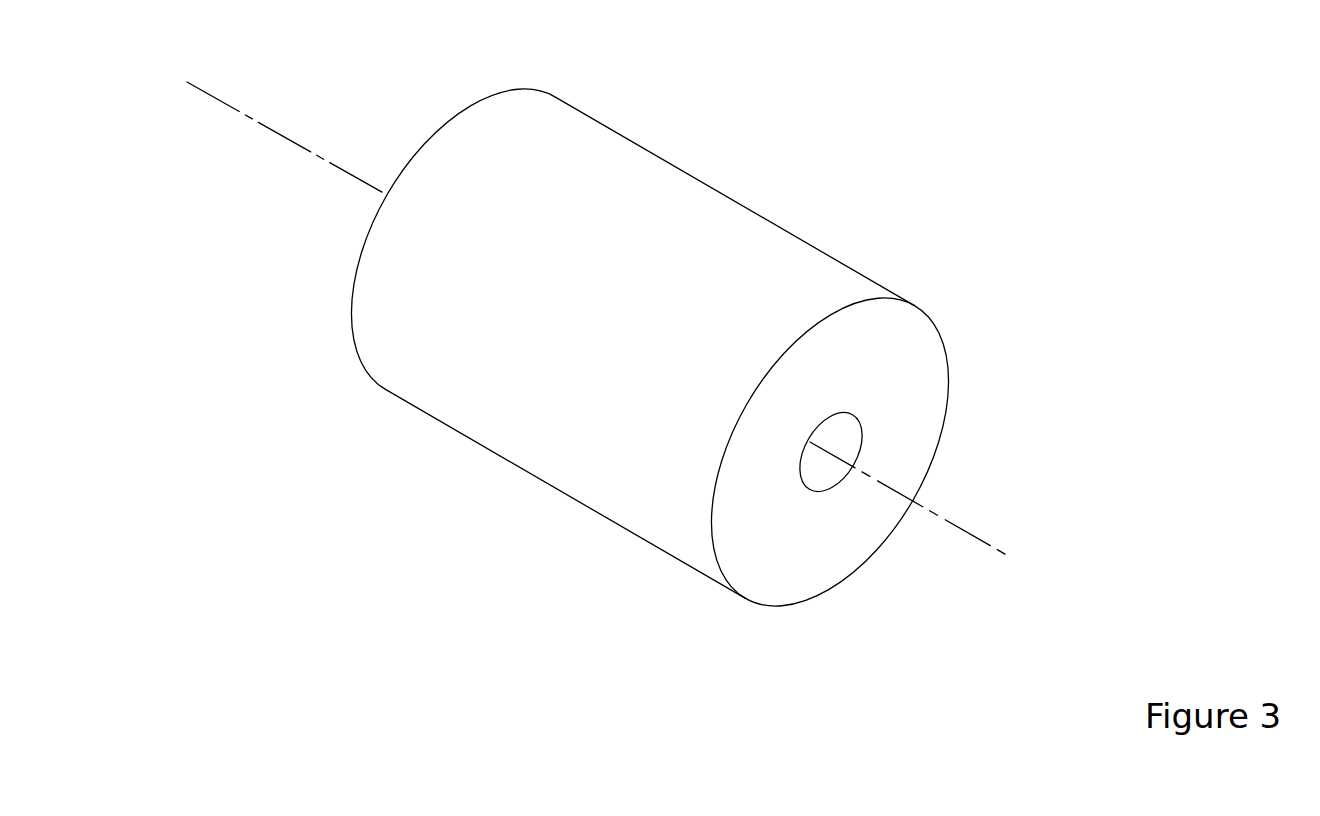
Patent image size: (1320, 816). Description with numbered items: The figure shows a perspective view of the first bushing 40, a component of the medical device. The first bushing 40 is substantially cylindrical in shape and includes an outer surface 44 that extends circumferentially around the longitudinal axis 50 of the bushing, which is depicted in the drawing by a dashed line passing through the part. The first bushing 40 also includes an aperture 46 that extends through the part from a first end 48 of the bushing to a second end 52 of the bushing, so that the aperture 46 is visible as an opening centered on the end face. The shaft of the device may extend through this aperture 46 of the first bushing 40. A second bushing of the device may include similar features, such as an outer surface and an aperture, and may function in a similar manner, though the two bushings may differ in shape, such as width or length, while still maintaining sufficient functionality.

The first bushing 40 is at (663, 338).
The outer surface 44 is at (510, 443).
The aperture 46 is at (843, 440).
The first end 48 is at (580, 92).
The longitudinal axis 50 is at (287, 140).
The second end 52 is at (935, 290).